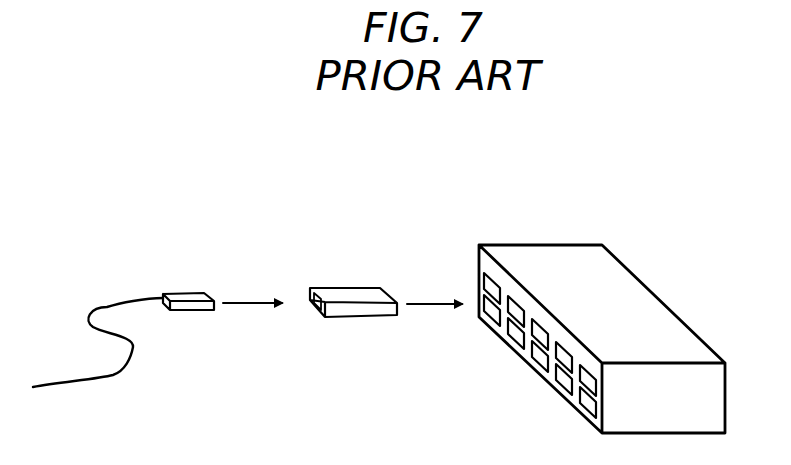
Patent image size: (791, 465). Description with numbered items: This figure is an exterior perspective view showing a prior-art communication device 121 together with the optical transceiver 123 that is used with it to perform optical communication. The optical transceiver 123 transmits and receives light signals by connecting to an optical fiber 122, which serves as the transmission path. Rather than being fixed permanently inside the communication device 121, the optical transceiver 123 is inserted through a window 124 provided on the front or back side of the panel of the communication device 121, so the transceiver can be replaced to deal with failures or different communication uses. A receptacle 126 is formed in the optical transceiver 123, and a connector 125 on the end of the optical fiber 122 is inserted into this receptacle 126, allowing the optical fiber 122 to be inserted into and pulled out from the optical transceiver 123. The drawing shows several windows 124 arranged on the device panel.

The communication device 121 is at (553, 247).
The optical fiber 122 is at (137, 350).
The optical transceiver 123 is at (370, 288).
The window 124 is at (479, 270).
The connector 125 is at (185, 288).
The receptacle 126 is at (310, 297).